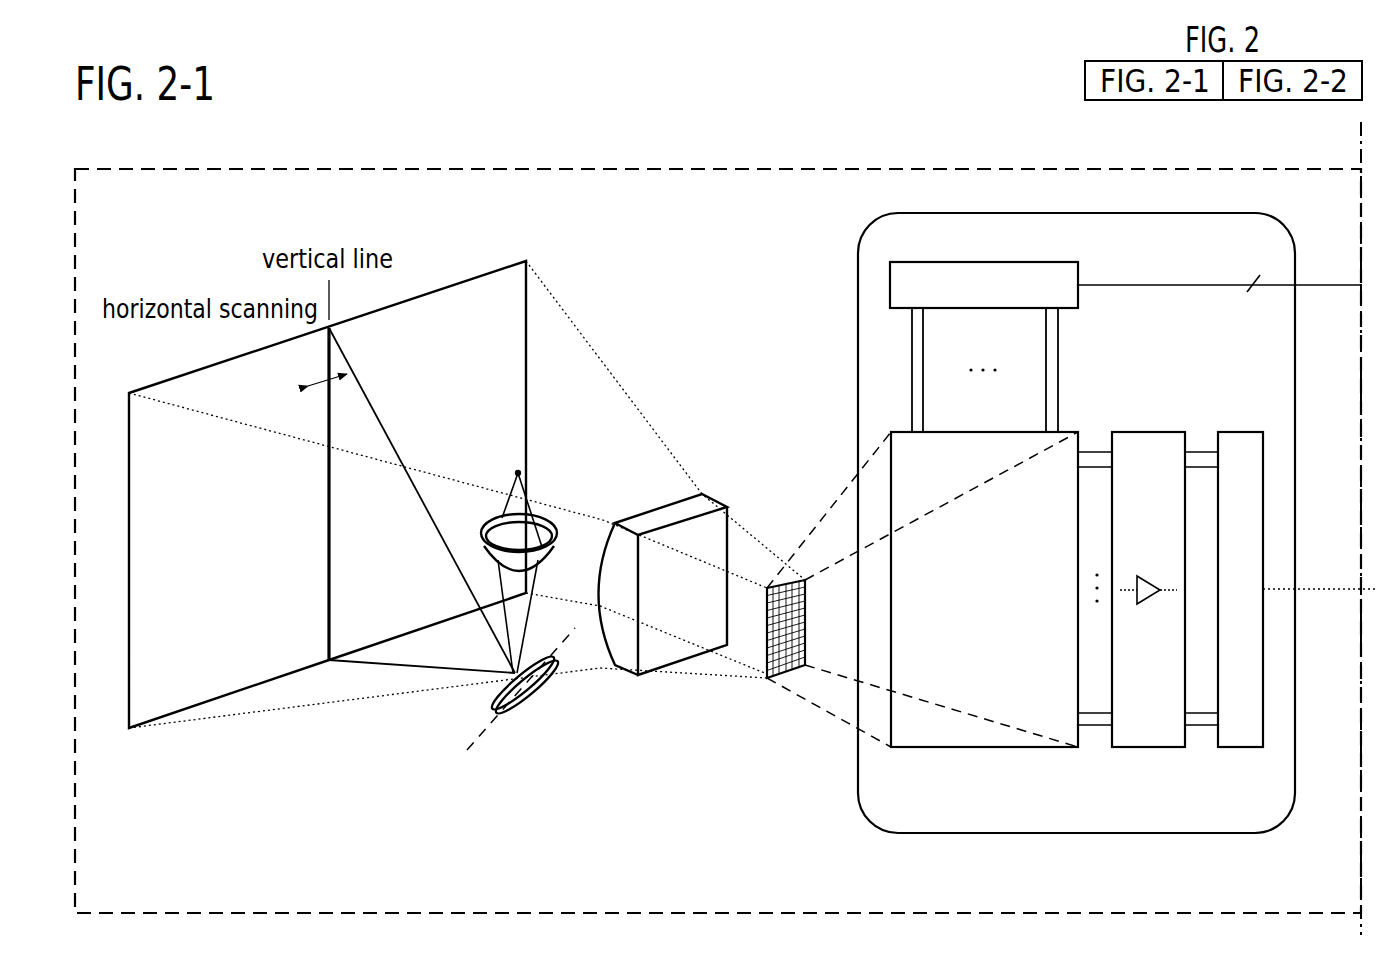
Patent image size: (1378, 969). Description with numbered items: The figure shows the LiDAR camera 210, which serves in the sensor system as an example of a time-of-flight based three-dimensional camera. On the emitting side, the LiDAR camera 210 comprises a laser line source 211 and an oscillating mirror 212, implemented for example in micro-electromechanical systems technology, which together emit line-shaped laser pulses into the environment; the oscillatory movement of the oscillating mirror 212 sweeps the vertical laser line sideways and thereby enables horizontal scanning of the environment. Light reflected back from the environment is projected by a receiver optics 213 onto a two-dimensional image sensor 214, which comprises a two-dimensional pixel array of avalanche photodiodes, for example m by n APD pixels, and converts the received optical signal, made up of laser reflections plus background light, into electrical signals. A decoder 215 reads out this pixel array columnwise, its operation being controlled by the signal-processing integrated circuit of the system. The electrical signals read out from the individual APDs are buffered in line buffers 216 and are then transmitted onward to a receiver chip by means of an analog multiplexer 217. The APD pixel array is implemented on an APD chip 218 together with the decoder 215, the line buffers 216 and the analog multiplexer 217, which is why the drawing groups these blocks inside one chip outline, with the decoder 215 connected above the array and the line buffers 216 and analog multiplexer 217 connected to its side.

The LiDAR camera 210 is at (695, 168).
The laser line source 211 is at (503, 422).
The oscillating mirror 212 is at (530, 690).
The receiver optics 213 is at (699, 443).
The 2D image sensor 214 is at (704, 733).
The decoder 215 is at (1082, 275).
The line buffers 216 is at (1148, 432).
The analog multiplexer 217 is at (1240, 432).
The APD chip 218 is at (1078, 834).